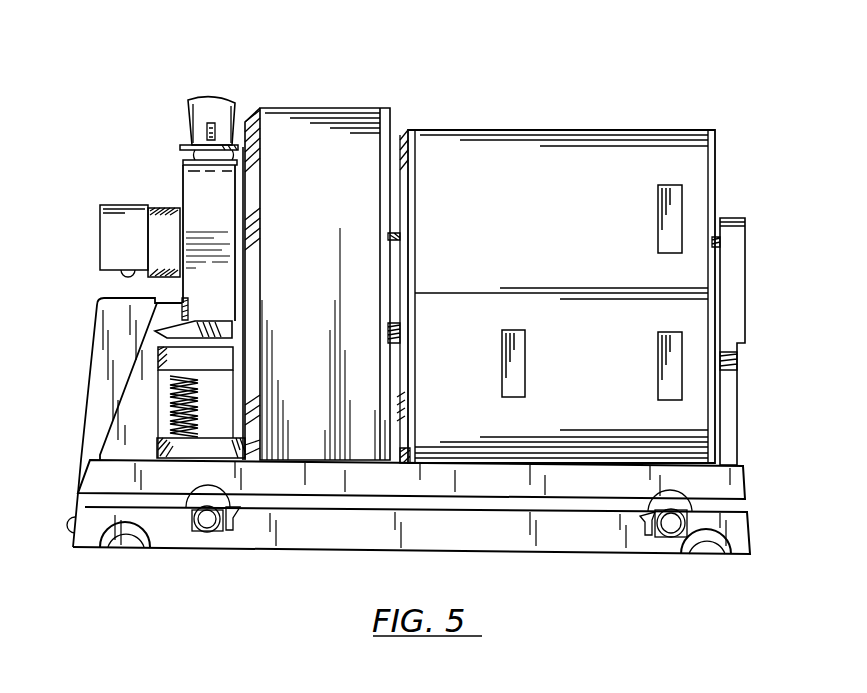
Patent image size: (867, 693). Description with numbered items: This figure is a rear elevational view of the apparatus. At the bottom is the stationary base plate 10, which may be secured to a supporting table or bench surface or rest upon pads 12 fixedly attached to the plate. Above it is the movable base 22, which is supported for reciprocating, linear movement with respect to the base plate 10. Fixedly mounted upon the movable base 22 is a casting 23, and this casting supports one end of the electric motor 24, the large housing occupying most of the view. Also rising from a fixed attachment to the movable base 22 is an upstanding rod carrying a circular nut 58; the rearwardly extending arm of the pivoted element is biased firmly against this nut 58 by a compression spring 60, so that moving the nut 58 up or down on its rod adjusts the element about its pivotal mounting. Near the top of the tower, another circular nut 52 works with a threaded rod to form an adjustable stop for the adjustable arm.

The base plate 10 is at (331, 540).
The pads 12 is at (132, 560).
The movable base 22 is at (717, 483).
The casting 23 is at (738, 465).
The electric motor 24 is at (560, 132).
The circular nut 52 is at (187, 150).
The circular nut 58 is at (156, 330).
The compression spring 60 is at (198, 418).